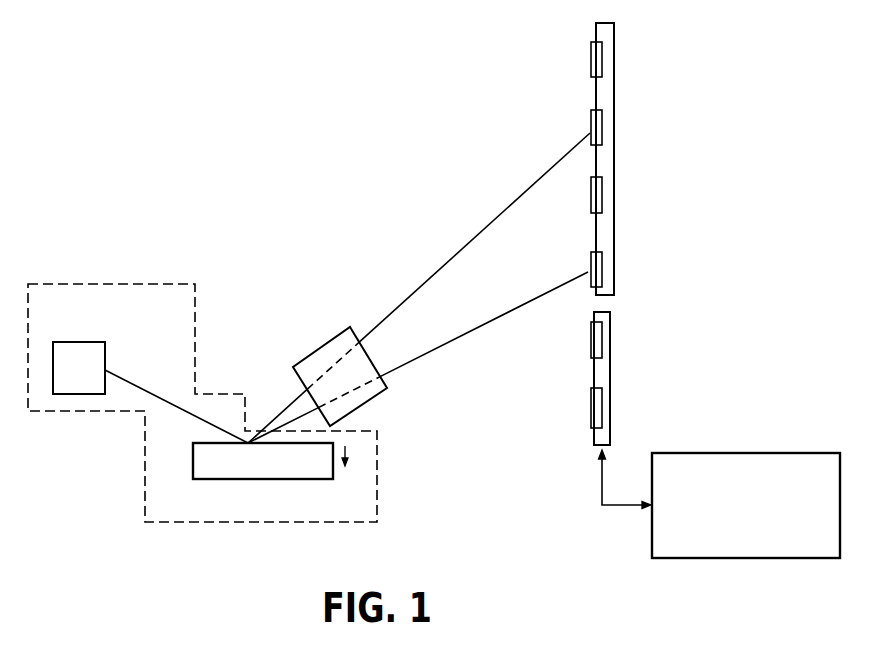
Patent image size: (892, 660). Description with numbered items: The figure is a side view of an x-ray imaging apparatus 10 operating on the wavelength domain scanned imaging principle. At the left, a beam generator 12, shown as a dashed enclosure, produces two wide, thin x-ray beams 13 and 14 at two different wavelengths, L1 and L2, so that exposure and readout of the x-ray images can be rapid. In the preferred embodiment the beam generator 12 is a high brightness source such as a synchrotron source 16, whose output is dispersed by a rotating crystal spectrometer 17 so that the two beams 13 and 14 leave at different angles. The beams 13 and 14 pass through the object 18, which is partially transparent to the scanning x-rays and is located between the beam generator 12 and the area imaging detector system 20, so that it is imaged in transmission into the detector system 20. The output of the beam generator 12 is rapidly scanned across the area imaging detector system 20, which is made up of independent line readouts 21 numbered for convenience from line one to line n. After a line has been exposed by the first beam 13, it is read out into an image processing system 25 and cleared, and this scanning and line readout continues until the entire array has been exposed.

The imaging apparatus 10 is at (268, 168).
The beam generator 12 is at (215, 337).
The x-ray beam 13 is at (400, 367).
The x-ray beam 14 is at (422, 285).
The synchrotron source 16 is at (87, 342).
The rotating crystal spectrometer 17 is at (228, 470).
The object 18 is at (335, 330).
The area imaging detector system 20 is at (522, 132).
The line readouts 21 is at (593, 110).
The image processing system 25 is at (750, 560).